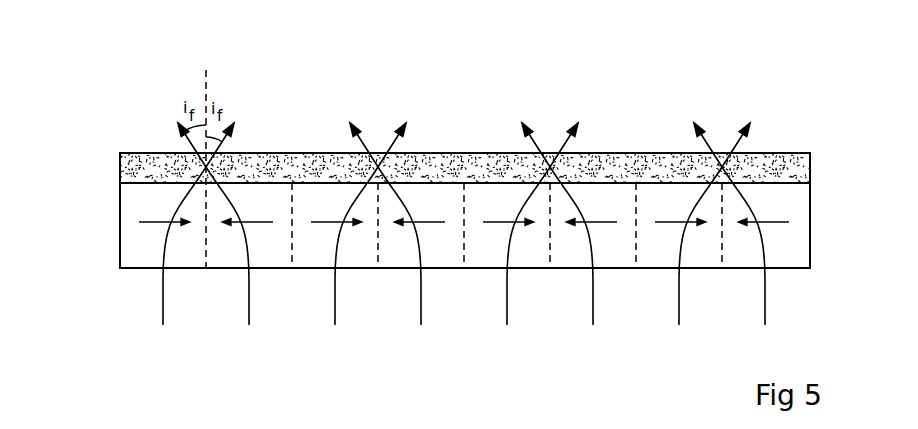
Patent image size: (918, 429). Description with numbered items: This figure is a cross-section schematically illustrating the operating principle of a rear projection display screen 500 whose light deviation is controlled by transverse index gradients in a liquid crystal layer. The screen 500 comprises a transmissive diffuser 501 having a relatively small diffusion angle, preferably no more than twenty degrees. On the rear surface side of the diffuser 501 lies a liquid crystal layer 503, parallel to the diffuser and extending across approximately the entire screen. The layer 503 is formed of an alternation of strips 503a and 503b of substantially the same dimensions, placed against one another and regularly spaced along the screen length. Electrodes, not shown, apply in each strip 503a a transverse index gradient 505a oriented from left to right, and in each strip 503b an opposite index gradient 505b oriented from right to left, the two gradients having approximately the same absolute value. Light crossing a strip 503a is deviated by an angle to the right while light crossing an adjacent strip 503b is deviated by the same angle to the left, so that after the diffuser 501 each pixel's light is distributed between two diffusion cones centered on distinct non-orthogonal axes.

The rear projection display screen 500 is at (68, 80).
The transmissive diffuser 501 is at (120, 167).
The liquid crystal layer 503 is at (130, 212).
The strip 503a is at (143, 258).
The strip 503b is at (227, 260).
The transverse index gradient 505a is at (153, 221).
The transverse index gradient 505b is at (260, 221).